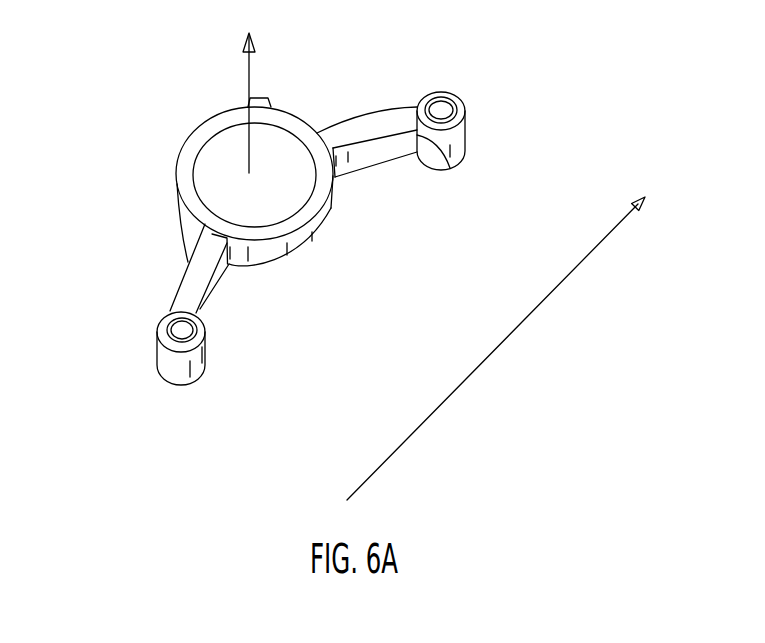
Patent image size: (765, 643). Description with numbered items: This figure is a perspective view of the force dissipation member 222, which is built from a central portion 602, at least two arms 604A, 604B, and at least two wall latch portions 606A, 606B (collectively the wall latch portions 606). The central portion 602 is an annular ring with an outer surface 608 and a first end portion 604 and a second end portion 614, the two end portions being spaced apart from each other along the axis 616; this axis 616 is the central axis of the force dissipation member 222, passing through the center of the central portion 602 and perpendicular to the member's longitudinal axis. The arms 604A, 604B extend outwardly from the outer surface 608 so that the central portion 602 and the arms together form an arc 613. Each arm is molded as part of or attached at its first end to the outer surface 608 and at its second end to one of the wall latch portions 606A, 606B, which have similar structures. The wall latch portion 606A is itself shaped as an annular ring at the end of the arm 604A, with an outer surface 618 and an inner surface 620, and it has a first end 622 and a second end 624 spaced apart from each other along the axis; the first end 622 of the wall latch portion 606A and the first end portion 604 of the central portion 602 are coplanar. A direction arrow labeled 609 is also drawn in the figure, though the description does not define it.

The central portion 602 is at (177, 182).
The force dissipation member 222 is at (187, 220).
The first end portion 604 is at (312, 246).
The arm 604A is at (181, 287).
The arm 604B is at (367, 141).
The wall latch portions 606 is at (308, 110).
The wall latch portion 606A is at (170, 372).
The wall latch portion 606B is at (462, 108).
The outer surface 608 is at (247, 87).
The lateral direction 609 is at (537, 308).
The arc 613 is at (227, 243).
The second end portion 614 is at (232, 265).
The axis 616 is at (447, 156).
The outer surface 618 is at (207, 370).
The inner surface 620 is at (168, 348).
The first end 622 is at (203, 392).
The second end 624 is at (167, 332).